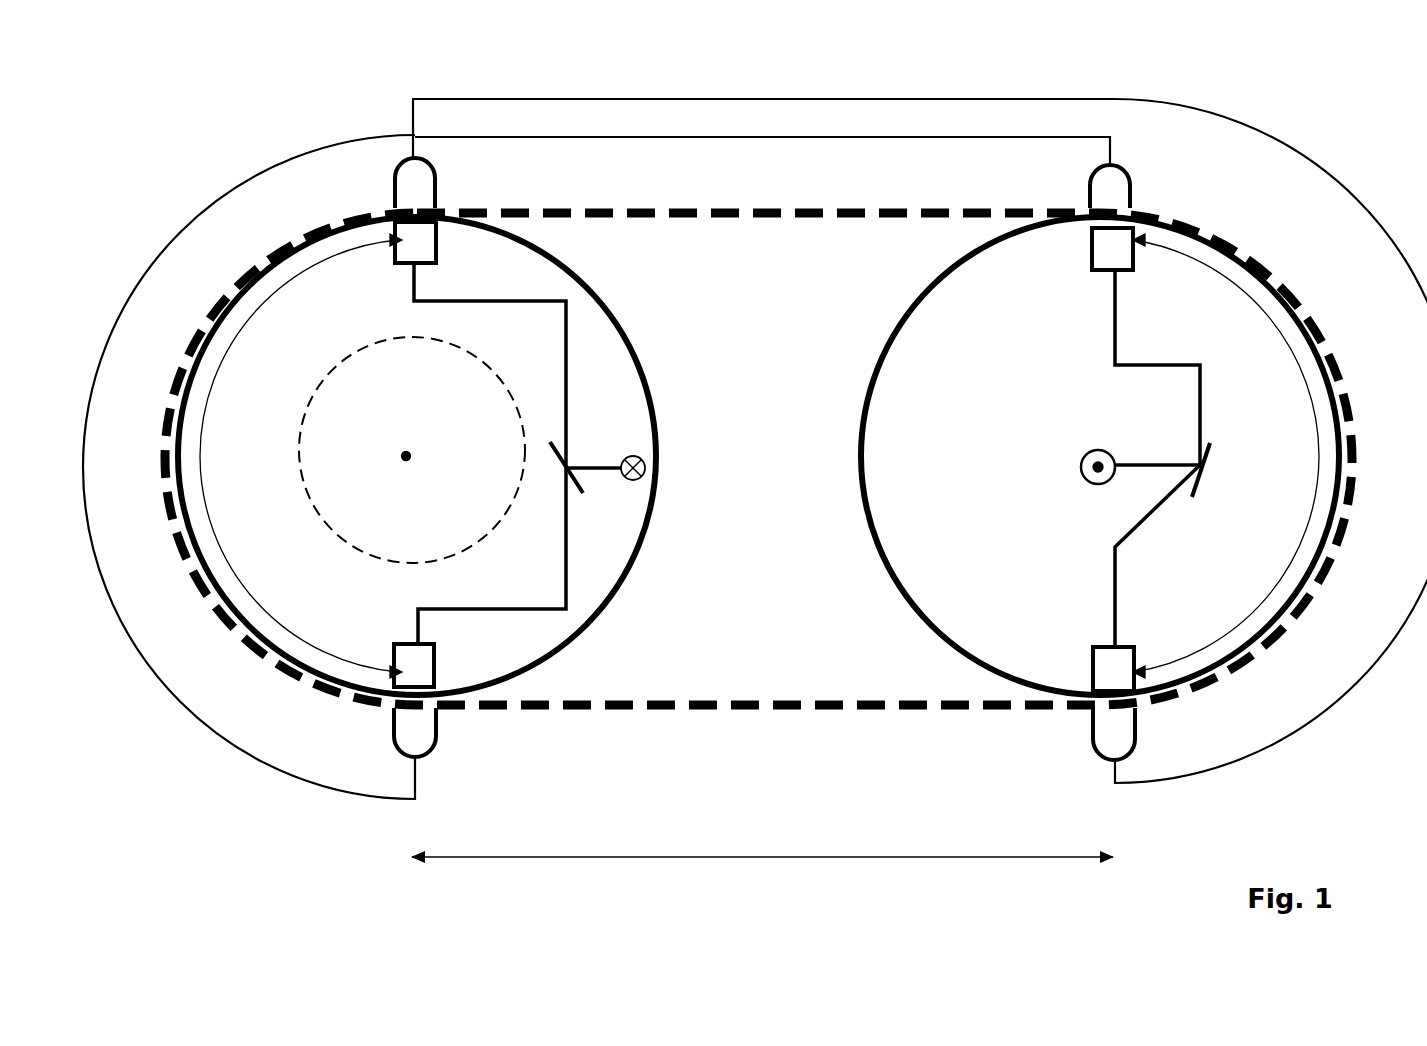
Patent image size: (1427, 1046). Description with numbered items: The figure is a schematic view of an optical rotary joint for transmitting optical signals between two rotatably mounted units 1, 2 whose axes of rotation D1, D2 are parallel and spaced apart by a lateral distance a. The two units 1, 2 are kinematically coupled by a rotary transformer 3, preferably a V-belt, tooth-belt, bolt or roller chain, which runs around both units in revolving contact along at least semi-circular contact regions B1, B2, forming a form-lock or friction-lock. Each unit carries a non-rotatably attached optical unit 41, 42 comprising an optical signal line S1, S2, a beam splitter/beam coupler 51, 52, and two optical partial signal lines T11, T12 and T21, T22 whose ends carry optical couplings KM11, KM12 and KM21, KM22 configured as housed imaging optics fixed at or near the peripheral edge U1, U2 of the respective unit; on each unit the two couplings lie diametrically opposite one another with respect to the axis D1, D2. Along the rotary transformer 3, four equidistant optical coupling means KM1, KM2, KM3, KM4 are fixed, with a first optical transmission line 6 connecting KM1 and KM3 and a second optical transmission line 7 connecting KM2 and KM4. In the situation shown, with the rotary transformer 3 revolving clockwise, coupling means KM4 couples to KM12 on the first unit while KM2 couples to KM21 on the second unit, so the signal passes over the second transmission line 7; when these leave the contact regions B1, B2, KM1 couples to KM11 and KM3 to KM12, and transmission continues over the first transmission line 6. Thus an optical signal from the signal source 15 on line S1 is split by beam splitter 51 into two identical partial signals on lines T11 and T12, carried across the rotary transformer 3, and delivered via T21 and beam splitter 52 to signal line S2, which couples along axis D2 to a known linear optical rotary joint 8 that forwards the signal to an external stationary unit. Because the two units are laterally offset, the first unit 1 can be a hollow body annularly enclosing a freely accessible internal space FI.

The first rotatably mounted unit 1 is at (279, 511).
The second rotatably mounted unit 2 is at (916, 511).
The rotary transformer 3 is at (862, 712).
The first optical transmission line 6 is at (805, 99).
The second optical transmission line 7 is at (183, 226).
The linear optical rotary joint 8 is at (1087, 477).
The optical signal source 15 is at (645, 477).
The optical unit 41 is at (607, 367).
The optical unit 42 is at (1222, 322).
The beam splitter/beam coupler 51 is at (580, 487).
The beam splitter/beam coupler 52 is at (1205, 472).
The optical coupling means KM1 is at (389, 162).
The optical coupling means KM2 is at (1129, 185).
The optical coupling means KM3 is at (1095, 748).
The optical coupling means KM4 is at (435, 740).
The optical coupling KM11 is at (414, 243).
The optical coupling KM12 is at (377, 707).
The optical coupling KM21 is at (1094, 243).
The optical coupling KM22 is at (1140, 700).
The optical partial signal line T11 is at (563, 368).
The optical partial signal line T12 is at (548, 608).
The optical partial signal line T21 is at (1113, 347).
The optical partial signal line T22 is at (1127, 540).
The optical signal line S1 is at (597, 467).
The optical signal line S2 is at (1148, 463).
The axis of rotation D1 is at (409, 458).
The axis of rotation D2 is at (1092, 452).
The contact region B1 is at (222, 357).
The contact region B2 is at (1257, 620).
The peripheral edge U1 is at (623, 610).
The peripheral edge U2 is at (890, 600).
The internal space FI is at (361, 471).
The lateral distance a is at (762, 884).